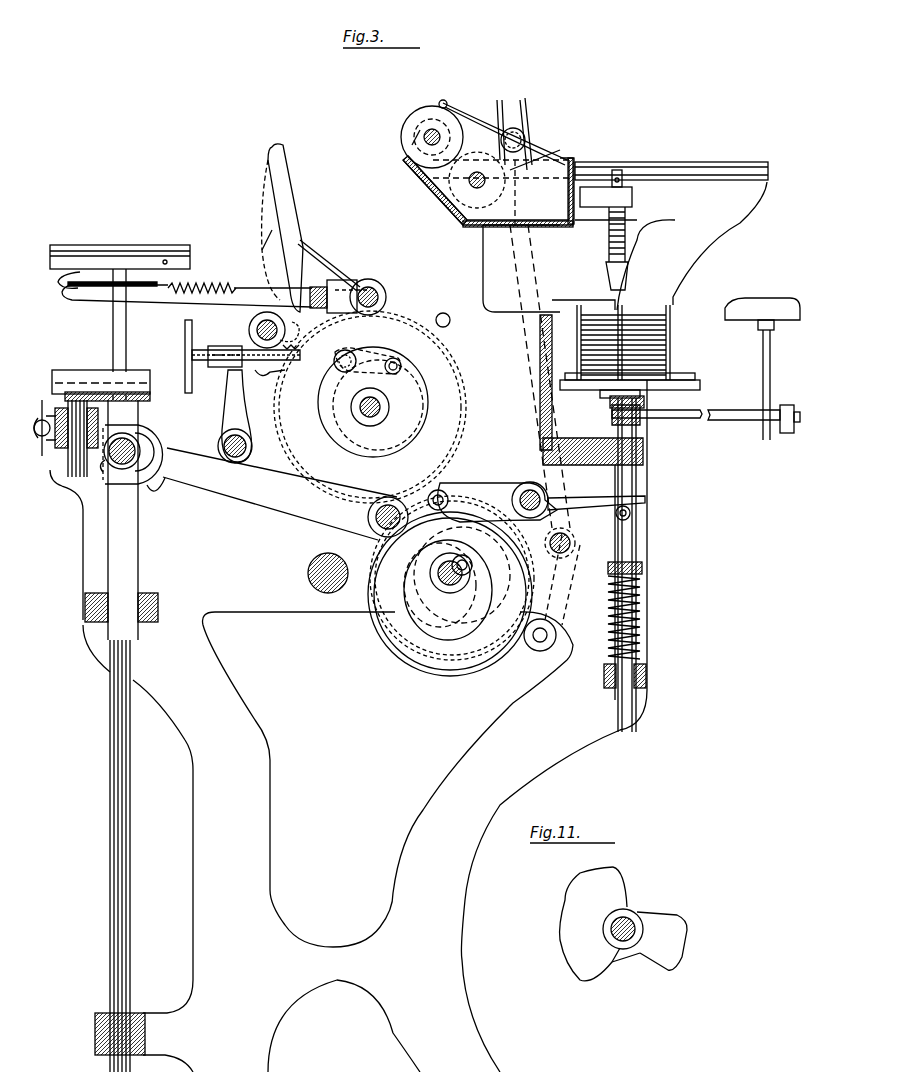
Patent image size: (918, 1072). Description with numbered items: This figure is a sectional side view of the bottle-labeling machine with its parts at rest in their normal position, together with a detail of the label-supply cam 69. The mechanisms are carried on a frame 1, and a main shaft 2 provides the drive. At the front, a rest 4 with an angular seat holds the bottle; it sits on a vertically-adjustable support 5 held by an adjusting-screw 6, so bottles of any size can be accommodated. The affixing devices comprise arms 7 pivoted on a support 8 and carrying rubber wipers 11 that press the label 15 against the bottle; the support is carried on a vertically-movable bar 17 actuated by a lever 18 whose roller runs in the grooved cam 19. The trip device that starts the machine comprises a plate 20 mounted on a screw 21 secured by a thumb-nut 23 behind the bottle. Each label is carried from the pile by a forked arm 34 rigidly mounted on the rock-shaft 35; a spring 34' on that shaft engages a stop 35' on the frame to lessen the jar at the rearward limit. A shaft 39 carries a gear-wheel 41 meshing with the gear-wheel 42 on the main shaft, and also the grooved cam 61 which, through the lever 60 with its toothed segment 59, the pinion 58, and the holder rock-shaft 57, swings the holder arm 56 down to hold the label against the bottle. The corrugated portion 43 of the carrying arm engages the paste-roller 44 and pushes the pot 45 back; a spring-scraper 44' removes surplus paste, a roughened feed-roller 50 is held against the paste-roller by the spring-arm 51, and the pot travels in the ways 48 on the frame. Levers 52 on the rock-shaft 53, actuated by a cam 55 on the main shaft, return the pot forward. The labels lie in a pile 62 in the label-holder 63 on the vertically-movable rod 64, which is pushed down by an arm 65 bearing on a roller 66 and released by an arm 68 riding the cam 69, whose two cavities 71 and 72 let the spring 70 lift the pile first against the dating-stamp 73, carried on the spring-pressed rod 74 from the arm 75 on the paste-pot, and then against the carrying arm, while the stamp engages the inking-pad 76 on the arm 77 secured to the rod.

In FIG. 3, the frame 1 is at (348, 771).
In FIG. 3, the main shaft 2 is at (440, 585).
In FIG. 3, the rest 4 is at (76, 372).
In FIG. 3, the vertically-adjustable support 5 is at (72, 462).
In FIG. 3, the adjusting-screw 6 is at (40, 428).
In FIG. 3, the arms 7 is at (126, 335).
In FIG. 3, the support 8 is at (140, 448).
In FIG. 3, the wipers 11 is at (113, 246).
In FIG. 3, the label 15 is at (59, 285).
In FIG. 3, the vertically-movable bar 17 is at (130, 817).
In FIG. 3, the lever 18 is at (285, 494).
In FIG. 3, the grooved cam 19 is at (440, 678).
In FIG. 3, the plate 20 is at (185, 346).
In FIG. 3, the screw 21 is at (246, 363).
In FIG. 3, the thumb-nut 23 is at (230, 380).
In FIG. 3, the forked or bifurcated arm 34 is at (187, 281).
In FIG. 3, the spring 34' is at (330, 264).
In FIG. 3, the rock-shaft 35 is at (360, 288).
In FIG. 3, the stop 35' is at (460, 324).
In FIG. 3, the shaft 39 is at (358, 415).
In FIG. 3, the gear-wheel 41 is at (466, 395).
In FIG. 3, the gear-wheel 42 is at (360, 537).
In FIG. 3, the roughened or corrugated portion 43 is at (206, 289).
In FIG. 3, the paste-roller 44 is at (417, 137).
In FIG. 3, the spring-scraper 44' is at (503, 123).
In FIG. 3, the pot 45 is at (488, 193).
In FIG. 3, the ways 48 is at (718, 166).
In FIG. 3, the feed-roller 50 is at (455, 185).
In FIG. 3, the spring-arm 51 is at (537, 160).
In FIG. 3, the levers 52 is at (522, 258).
In FIG. 3, the rock-shaft 53 is at (576, 543).
In FIG. 3, the cam 55 is at (500, 650).
In FIG. 3, the arm 56 is at (300, 220).
In FIG. 3, the holder rock-shaft 57 is at (262, 325).
In FIG. 3, the pinion 58 is at (252, 339).
In FIG. 3, the toothed segment 59 is at (280, 376).
In FIG. 3, the lever 60 is at (312, 360).
In FIG. 3, the grooved cam 61 is at (360, 450).
In FIG. 3, the pile 62 is at (640, 325).
In FIG. 3, the label-holder 63 is at (680, 380).
In FIG. 3, the vertically-movable rod 64 is at (638, 478).
In FIG. 3, the arm 65 is at (645, 498).
In FIG. 3, the roller 66 is at (632, 513).
In FIG. 3, the arm 68 is at (490, 480).
In FIG. 3, the cam 69 is at (420, 580).
In FIG. 11, the cam 69 is at (565, 913).
In FIG. 3, the spring 70 is at (650, 620).
In FIG. 11, the cavity 71 is at (640, 900).
In FIG. 11, the cavity 72 is at (625, 958).
In FIG. 3, the dating-stamp 73 is at (610, 273).
In FIG. 3, the spring-pressed rod 74 is at (608, 241).
In FIG. 3, the arm 75 is at (606, 188).
In FIG. 3, the inking-pad 76 is at (762, 300).
In FIG. 3, the arm 77 is at (730, 412).